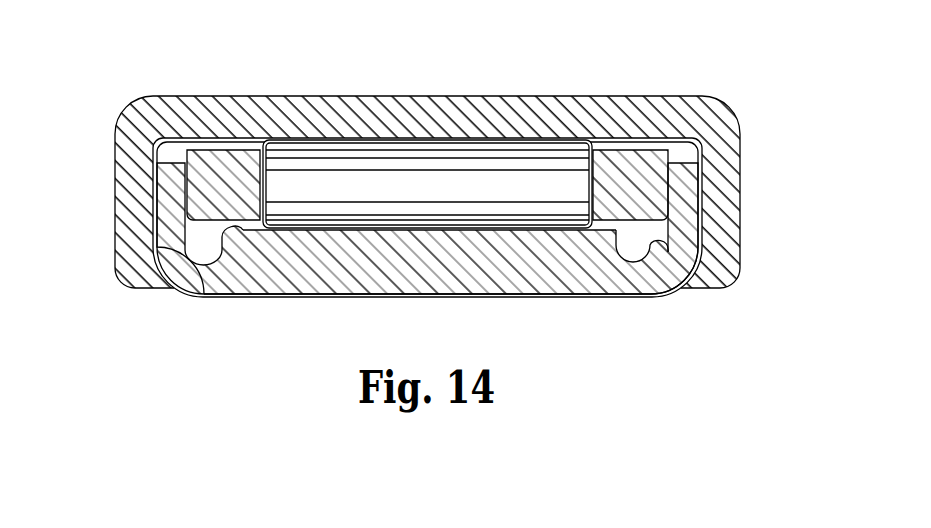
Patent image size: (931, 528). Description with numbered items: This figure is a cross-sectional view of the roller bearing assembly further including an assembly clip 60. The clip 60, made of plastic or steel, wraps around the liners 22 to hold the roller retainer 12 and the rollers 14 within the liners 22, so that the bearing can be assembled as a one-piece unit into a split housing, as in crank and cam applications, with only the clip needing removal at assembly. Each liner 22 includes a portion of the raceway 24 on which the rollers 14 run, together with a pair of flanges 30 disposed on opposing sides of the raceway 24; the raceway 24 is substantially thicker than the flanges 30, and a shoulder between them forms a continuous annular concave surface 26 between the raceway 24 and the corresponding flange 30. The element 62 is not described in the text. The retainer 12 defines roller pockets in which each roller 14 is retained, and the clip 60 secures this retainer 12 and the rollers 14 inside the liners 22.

The assembly clip 60 is at (207, 97).
The liner layer 62 is at (126, 173).
The liner 22 is at (290, 297).
The flange 30 is at (160, 212).
The raceway 24 is at (236, 226).
The annular concave surface 26 is at (668, 247).
The roller retainer 12 is at (642, 167).
The roller 14 is at (373, 148).